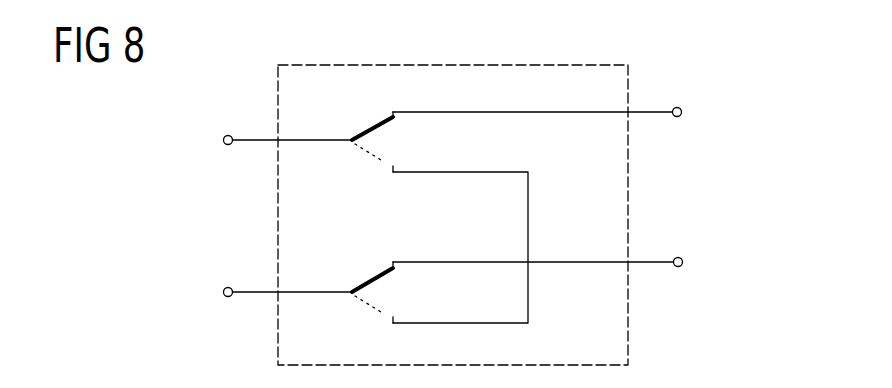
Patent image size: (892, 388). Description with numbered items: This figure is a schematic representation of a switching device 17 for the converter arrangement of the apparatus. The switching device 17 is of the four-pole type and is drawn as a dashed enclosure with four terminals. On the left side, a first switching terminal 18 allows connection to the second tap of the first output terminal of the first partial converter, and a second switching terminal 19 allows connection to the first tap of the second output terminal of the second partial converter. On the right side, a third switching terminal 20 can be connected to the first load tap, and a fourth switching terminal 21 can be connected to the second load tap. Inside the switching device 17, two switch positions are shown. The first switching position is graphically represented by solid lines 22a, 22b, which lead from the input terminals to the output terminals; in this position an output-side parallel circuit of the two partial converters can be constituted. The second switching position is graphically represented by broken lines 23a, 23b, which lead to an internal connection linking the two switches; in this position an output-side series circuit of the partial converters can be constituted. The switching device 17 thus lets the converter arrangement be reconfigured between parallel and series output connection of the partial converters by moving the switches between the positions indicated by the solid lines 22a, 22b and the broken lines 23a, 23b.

The switching device 17 is at (278, 215).
The first switching terminal 18 is at (223, 140).
The second switching terminal 19 is at (223, 292).
The third switching terminal 20 is at (682, 112).
The fourth switching terminal 21 is at (683, 262).
The solid line 22a is at (380, 120).
The broken line 23a is at (378, 162).
The solid line 22b is at (380, 273).
The broken line 23b is at (378, 313).